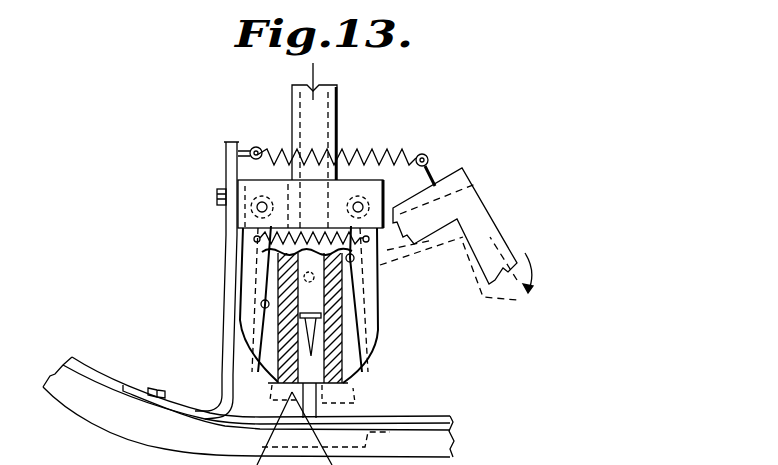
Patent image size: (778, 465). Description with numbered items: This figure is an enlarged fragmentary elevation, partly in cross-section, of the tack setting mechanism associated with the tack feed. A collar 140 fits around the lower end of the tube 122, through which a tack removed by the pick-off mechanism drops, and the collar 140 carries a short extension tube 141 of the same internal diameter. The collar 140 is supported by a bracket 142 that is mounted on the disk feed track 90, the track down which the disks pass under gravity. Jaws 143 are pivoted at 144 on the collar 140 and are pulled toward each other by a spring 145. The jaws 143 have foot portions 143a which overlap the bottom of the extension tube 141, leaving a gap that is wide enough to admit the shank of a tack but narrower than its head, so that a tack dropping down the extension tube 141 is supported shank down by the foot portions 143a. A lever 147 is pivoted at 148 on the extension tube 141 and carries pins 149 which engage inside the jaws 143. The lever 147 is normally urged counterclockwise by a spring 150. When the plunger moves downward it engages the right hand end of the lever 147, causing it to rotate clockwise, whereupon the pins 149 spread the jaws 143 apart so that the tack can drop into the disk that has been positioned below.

The disk feed track 90 is at (111, 424).
The tube 122 is at (327, 107).
The collar 140 is at (396, 158).
The extension tube 141 is at (348, 290).
The bracket 142 is at (228, 318).
The jaws 143 is at (262, 344).
The foot portions 143a is at (345, 398).
The pivot 144 is at (262, 208).
The spring 145 is at (258, 240).
The lever 147 is at (458, 188).
The pivot 148 is at (276, 263).
The pins 149 is at (262, 303).
The spring 150 is at (353, 153).